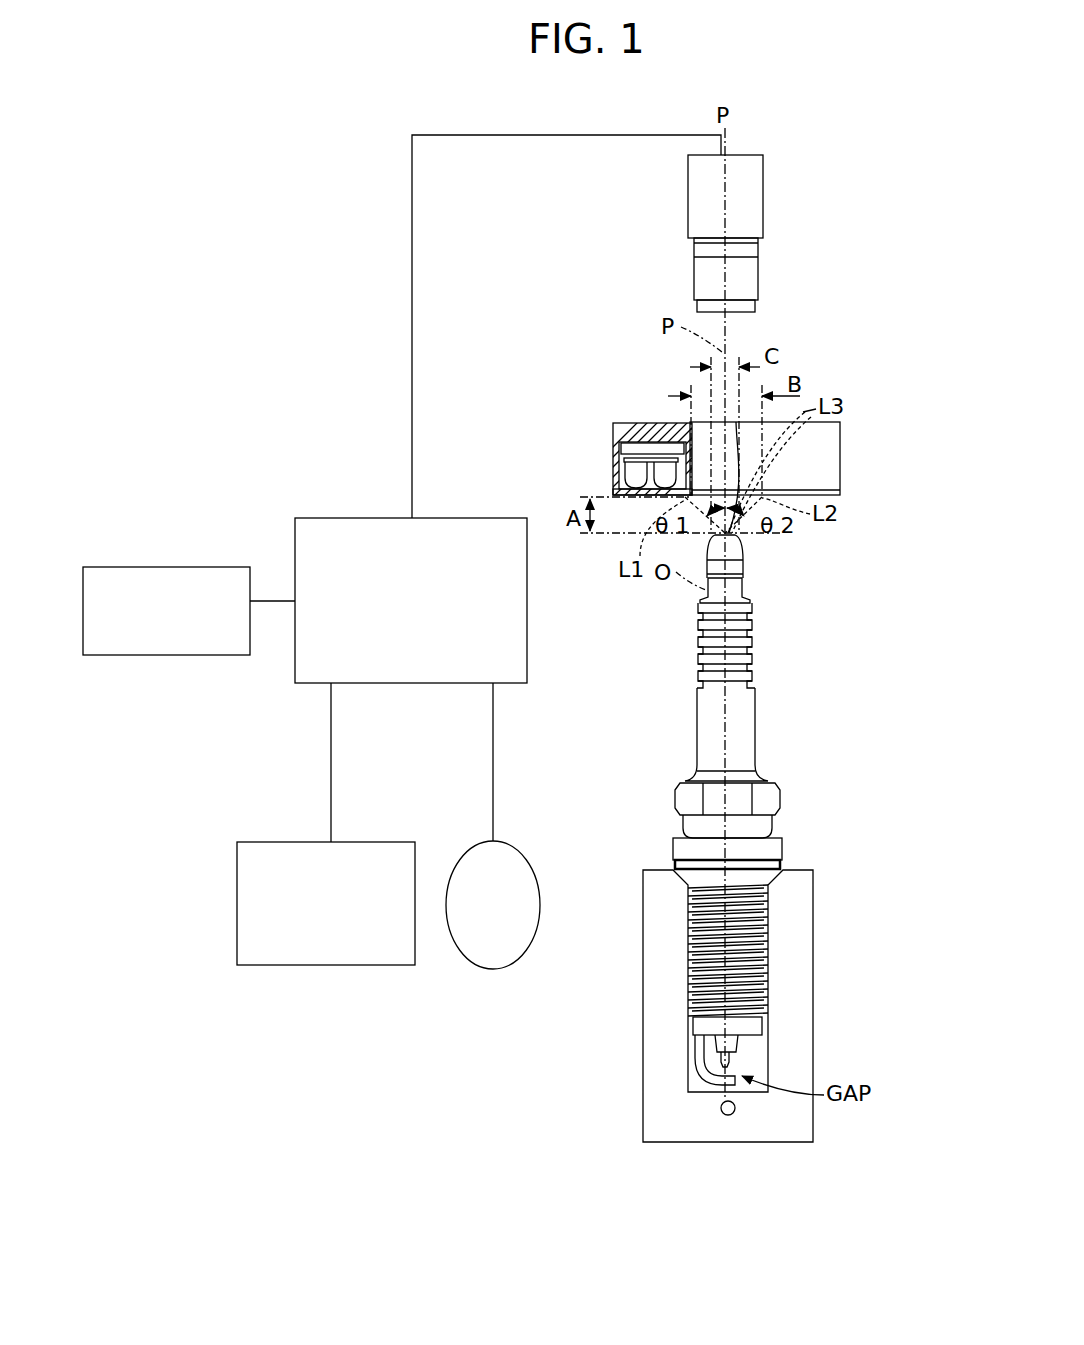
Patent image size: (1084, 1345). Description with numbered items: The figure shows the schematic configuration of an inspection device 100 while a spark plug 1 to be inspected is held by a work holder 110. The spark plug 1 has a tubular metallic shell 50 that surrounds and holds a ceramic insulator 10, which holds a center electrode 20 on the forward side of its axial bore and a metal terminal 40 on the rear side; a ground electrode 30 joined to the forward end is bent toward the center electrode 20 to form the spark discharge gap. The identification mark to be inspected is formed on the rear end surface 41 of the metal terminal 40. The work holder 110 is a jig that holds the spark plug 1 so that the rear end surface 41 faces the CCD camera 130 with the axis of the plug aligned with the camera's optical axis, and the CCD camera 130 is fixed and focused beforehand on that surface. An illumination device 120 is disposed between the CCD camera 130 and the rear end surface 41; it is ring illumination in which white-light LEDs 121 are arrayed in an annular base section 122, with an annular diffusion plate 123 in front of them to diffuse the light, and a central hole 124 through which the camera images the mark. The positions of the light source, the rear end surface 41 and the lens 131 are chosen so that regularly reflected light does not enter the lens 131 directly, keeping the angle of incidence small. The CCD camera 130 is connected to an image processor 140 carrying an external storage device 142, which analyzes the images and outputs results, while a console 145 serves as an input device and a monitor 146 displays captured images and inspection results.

The spark plug 1 is at (860, 601).
The ceramic insulator 10 is at (725, 819).
The center electrode 20 is at (741, 1064).
The ground electrode 30 is at (700, 1082).
The metal terminal 40 is at (765, 569).
The rear end surface 41 is at (741, 538).
The metallic shell 50 is at (791, 785).
The inspection device 100 is at (878, 200).
The work holder 110 is at (833, 896).
The illumination device 120 is at (733, 444).
The LEDs 121 is at (636, 473).
The annular base section 122 is at (626, 441).
The diffusion plate 123 is at (618, 493).
The hole 124 is at (693, 426).
The CCD camera 130 is at (773, 229).
The lens 131 is at (747, 313).
The image processor 140 is at (497, 518).
The external storage device 142 is at (190, 567).
The console 145 is at (519, 848).
The monitor 146 is at (387, 842).